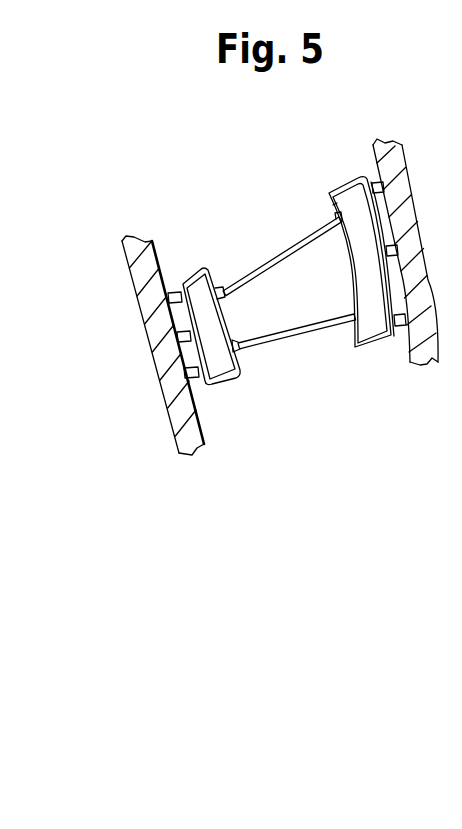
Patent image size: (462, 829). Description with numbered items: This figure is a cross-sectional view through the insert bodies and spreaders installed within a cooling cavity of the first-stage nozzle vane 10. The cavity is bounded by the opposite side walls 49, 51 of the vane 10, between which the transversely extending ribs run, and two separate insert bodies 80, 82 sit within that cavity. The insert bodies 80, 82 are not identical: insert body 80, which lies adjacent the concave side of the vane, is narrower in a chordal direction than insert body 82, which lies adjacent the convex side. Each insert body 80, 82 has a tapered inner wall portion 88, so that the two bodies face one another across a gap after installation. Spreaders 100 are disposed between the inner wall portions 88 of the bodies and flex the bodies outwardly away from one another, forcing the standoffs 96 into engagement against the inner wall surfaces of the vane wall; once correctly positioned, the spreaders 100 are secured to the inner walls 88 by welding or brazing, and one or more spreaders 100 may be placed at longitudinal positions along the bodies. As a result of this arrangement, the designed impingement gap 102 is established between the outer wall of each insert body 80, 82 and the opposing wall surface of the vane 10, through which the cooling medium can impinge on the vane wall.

The vane 10 is at (132, 283).
The side wall 49 is at (155, 310).
The second shell wall 51 is at (413, 243).
The insert body 80 is at (187, 282).
The insert body 82 is at (334, 188).
The inner wall portion 88 is at (334, 207).
The standoff 96 is at (198, 381).
The spreader 100 is at (264, 270).
The impingement gap 102 is at (173, 283).